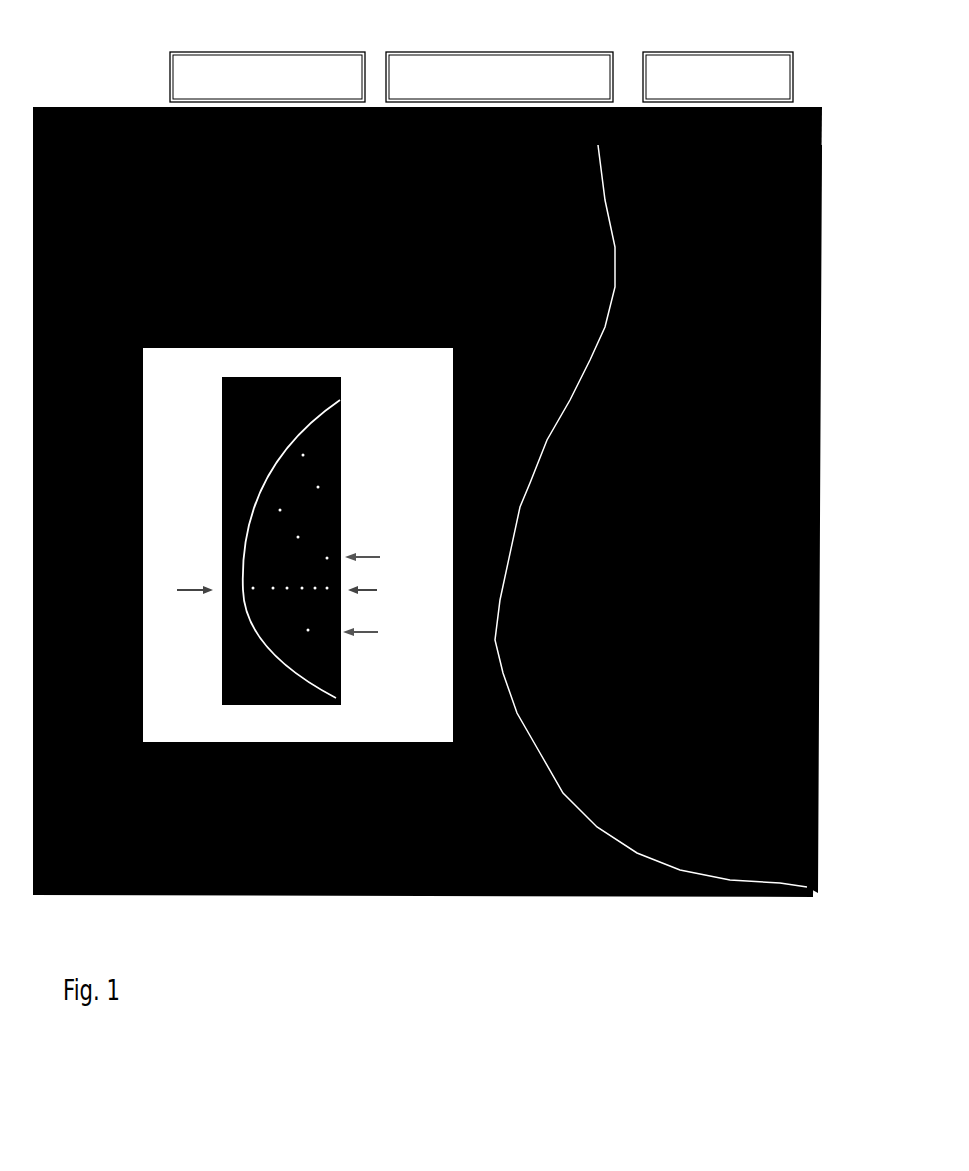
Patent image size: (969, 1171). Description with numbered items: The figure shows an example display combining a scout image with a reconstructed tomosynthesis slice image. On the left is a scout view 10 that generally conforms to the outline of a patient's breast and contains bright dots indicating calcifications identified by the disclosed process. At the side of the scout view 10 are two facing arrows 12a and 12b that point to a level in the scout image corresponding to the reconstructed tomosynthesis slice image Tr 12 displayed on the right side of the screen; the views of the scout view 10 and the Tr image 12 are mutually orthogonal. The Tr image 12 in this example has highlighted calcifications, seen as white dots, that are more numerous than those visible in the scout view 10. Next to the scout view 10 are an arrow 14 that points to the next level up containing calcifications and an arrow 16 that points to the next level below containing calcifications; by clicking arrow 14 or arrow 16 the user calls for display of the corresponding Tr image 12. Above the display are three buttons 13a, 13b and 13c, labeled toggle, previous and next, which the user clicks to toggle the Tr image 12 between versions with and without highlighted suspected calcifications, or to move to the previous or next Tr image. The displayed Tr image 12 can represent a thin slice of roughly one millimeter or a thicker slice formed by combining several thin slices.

The scout view 10 is at (348, 442).
The reconstructed tomosynthesis slice image Tr 12 is at (792, 462).
The facing arrow 12a is at (170, 585).
The facing arrow 12b is at (372, 582).
The button 13a is at (255, 45).
The button 13b is at (478, 45).
The button 13c is at (717, 43).
The arrow 14 is at (369, 536).
The arrow 16 is at (368, 634).